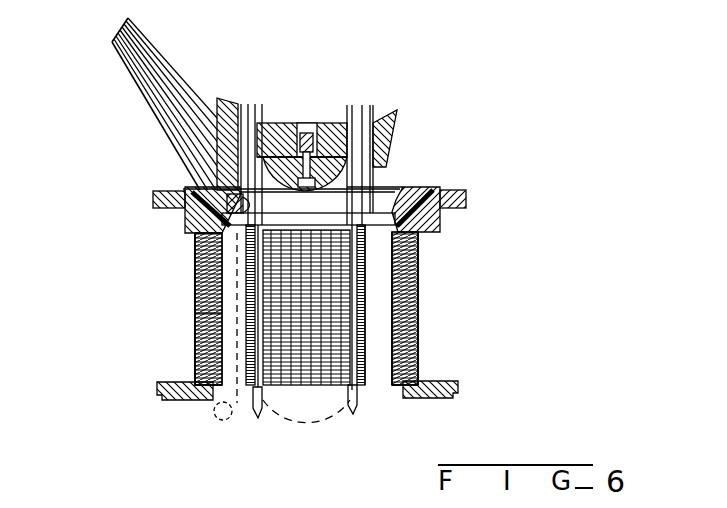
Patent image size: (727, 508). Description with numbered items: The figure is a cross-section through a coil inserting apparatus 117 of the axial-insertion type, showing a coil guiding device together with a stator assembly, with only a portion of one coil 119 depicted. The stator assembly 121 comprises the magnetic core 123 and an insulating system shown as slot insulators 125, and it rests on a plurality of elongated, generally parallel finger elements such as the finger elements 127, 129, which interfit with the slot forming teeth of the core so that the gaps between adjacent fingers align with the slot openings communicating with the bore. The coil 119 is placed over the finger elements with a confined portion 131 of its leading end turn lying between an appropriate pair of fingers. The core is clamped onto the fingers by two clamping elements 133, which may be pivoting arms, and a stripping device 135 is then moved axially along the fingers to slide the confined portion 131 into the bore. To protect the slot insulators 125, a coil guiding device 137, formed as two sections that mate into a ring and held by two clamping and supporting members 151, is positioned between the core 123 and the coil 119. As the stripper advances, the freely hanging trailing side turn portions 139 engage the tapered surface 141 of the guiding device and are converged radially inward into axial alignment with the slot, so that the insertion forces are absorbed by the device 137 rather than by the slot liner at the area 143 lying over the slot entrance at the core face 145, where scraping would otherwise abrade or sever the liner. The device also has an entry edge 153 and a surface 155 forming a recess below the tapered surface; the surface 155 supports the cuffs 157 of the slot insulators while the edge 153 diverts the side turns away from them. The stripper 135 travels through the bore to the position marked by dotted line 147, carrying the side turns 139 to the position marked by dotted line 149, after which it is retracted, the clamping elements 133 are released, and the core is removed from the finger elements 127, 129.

The coil inserting apparatus 117 is at (112, 325).
The coil 119 is at (130, 72).
The stator assembly 121 is at (197, 285).
The magnetic core 123 is at (197, 368).
The slot insulators 125 is at (197, 348).
The finger element 127 is at (258, 420).
The finger element 129 is at (355, 404).
The confined portion of leading end turn 131 is at (278, 200).
The clamping elements 133 is at (173, 402).
The stripping device 135 is at (268, 113).
The coil guiding device 137 is at (432, 217).
The trailing side turn portions 139 is at (167, 127).
The tapered surface 141 is at (220, 190).
The slot liner area 143 is at (197, 258).
The core face 145 is at (183, 218).
The stripper dotted-line position 147 is at (313, 424).
The side turns dotted-line position 149 is at (200, 313).
The clamping and supporting members 151 is at (153, 195).
The entry edge 153 is at (390, 210).
The surface 155 is at (420, 237).
The cuffs 157 is at (397, 230).